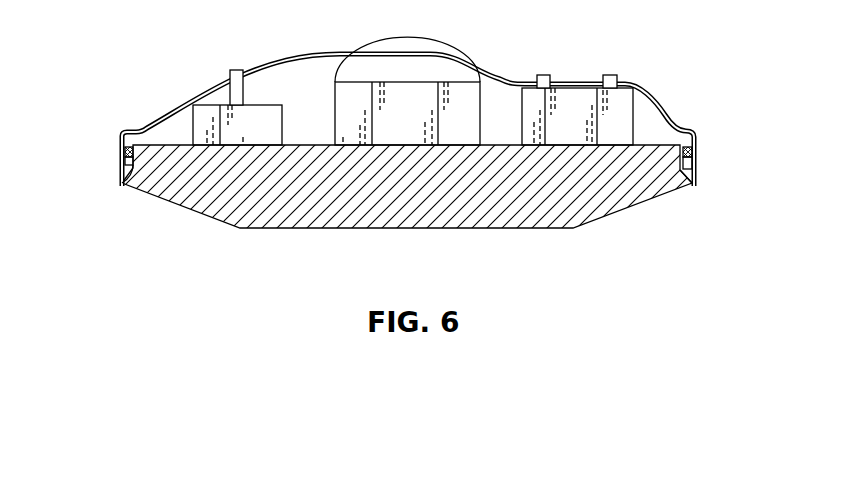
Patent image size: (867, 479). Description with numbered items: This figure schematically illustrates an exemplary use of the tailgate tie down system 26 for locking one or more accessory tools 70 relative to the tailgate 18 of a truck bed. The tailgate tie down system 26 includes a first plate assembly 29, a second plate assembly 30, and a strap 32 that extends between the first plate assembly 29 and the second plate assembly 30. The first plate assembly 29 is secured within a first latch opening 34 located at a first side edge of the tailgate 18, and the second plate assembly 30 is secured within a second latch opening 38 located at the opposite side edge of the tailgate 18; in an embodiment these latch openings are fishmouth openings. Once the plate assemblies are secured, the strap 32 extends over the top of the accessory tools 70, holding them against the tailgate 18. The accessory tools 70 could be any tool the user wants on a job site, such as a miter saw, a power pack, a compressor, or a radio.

The tailgate 18 is at (425, 218).
The tailgate tie down system 26 is at (114, 56).
The first plate assembly 29 is at (109, 147).
The second plate assembly 30 is at (712, 148).
The strap 32 is at (228, 78).
The first latch opening 34 is at (121, 186).
The second latch opening 38 is at (691, 184).
The accessory tools 70 is at (572, 97).